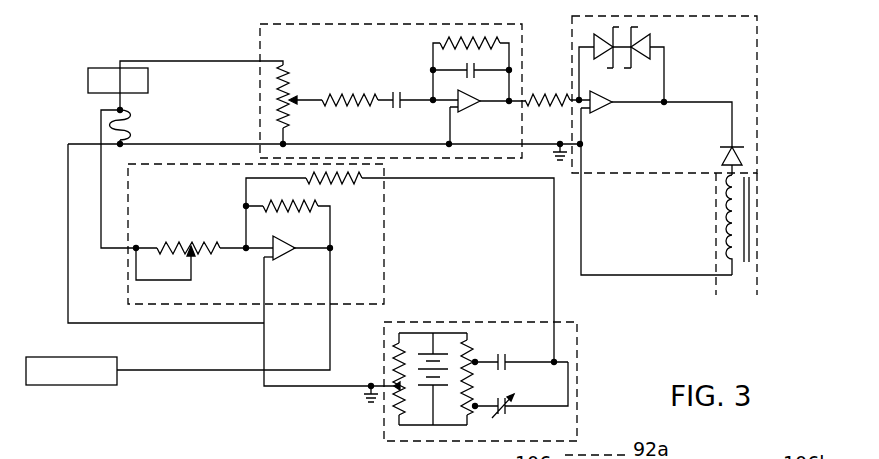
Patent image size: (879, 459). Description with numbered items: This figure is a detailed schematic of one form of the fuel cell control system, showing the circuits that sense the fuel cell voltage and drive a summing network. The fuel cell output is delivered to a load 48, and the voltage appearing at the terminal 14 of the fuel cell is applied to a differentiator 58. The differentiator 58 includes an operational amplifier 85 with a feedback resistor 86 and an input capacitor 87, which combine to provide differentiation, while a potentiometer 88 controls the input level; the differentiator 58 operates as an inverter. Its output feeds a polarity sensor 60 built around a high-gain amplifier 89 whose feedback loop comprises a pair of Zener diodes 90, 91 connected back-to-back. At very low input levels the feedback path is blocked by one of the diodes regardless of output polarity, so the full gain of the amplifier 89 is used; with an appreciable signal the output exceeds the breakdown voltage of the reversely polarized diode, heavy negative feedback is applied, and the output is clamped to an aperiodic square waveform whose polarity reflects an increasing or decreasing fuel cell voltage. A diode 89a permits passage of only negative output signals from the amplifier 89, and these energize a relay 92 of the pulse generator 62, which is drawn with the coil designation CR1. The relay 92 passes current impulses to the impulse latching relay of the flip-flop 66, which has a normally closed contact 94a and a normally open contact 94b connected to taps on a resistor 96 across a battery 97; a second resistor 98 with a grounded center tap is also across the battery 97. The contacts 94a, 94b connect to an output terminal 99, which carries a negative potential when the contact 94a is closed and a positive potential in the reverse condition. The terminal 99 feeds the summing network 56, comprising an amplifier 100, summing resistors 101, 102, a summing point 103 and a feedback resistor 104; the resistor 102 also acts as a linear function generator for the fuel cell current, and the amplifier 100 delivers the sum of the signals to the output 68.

The terminal 14 is at (170, 61).
The load 48 is at (148, 81).
The differentiator 58 is at (367, 27).
The potentiometer 88 is at (289, 86).
The input capacitor 87 is at (401, 106).
The feedback resistor 86 is at (443, 47).
The operational amplifier 85 is at (477, 107).
The polarity sensor 60 is at (572, 21).
The Zener diode 90 is at (596, 59).
The Zener diode 91 is at (641, 59).
The high-gain amplifier 89 is at (597, 113).
The diode 89a is at (743, 157).
The relay 92 is at (742, 268).
The relay CR1 is at (774, 219).
The pulse generator 62 is at (758, 284).
The summing network 56 is at (387, 228).
The summing resistor 102 is at (190, 246).
The summing point 103 is at (244, 245).
The feedback resistor 104 is at (303, 212).
The summing resistor 101 is at (352, 180).
The amplifier 100 is at (280, 258).
The output 68 is at (50, 357).
The flip-flop 66 is at (578, 421).
The second resistor 98 is at (398, 402).
The battery 97 is at (441, 353).
The resistor 96 is at (471, 343).
The normally open contact 94b is at (513, 349).
The output terminal 99 is at (553, 364).
The normally closed contact 94a is at (509, 410).